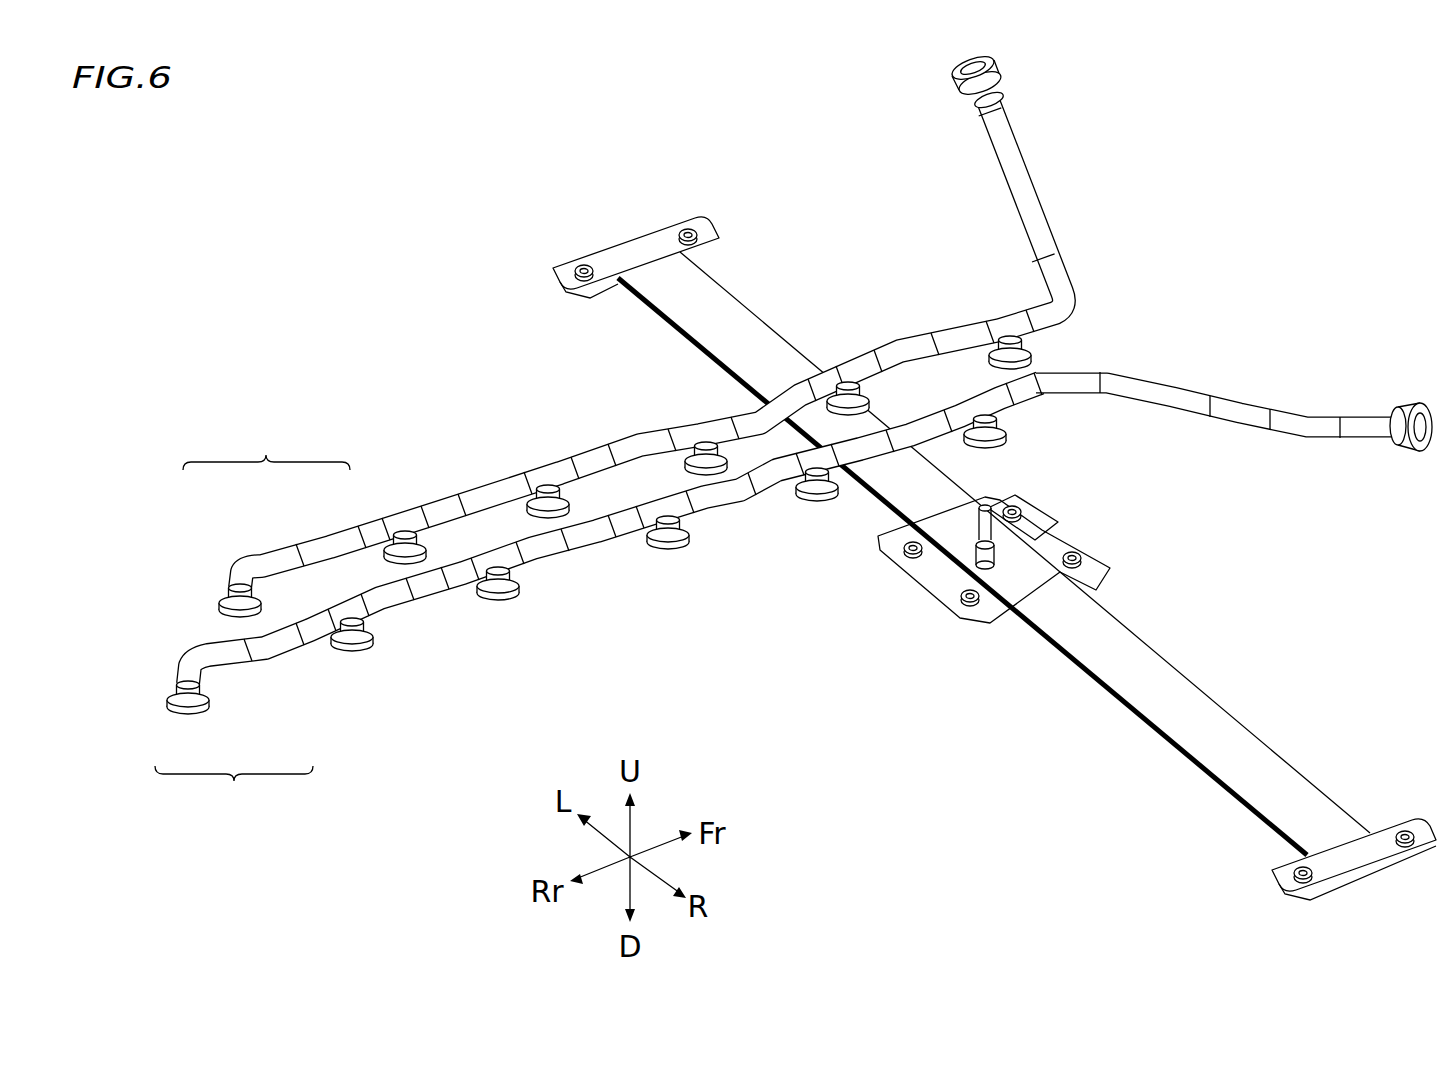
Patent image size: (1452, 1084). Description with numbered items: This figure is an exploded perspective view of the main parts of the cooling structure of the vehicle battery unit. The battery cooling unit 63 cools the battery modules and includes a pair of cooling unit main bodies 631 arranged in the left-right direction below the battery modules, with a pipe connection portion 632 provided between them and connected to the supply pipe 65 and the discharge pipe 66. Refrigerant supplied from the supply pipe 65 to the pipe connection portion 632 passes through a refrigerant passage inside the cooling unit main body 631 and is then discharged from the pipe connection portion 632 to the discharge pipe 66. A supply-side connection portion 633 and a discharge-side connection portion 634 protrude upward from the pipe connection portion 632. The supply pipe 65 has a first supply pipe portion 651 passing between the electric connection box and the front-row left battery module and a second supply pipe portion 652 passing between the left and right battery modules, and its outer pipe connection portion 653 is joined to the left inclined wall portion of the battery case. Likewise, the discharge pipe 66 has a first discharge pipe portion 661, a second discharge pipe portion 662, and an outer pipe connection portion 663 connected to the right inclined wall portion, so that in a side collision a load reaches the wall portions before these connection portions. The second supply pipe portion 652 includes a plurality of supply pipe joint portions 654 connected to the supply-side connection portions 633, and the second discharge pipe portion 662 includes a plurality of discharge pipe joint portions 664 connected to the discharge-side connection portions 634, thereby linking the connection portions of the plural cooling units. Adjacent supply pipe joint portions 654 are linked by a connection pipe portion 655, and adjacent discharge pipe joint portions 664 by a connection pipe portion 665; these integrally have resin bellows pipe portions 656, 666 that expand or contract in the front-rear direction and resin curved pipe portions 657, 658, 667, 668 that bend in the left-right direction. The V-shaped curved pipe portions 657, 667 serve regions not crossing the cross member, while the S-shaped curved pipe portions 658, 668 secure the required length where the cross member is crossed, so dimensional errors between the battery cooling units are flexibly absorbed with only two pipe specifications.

The battery cooling unit 63 is at (994, 558).
The cooling unit main body 631 is at (712, 318).
The pipe connection portion 632 is at (1075, 552).
The supply-side connection portion 633 is at (1000, 507).
The discharge-side connection portion 634 is at (1032, 523).
The supply pipe 65 is at (627, 332).
The first supply pipe portion 651 is at (1033, 200).
The second supply pipe portion 652 is at (405, 512).
The outer pipe connection portion 653 is at (1000, 78).
The supply pipe joint portion 654 is at (903, 340).
The connection pipe portion 655 is at (266, 446).
The bellows pipe portion 656 is at (833, 377).
The curved pipe portion 657 is at (782, 395).
The curved pipe portion 658 is at (930, 350).
The discharge pipe 66 is at (803, 571).
The first discharge pipe portion 661 is at (1225, 388).
The second discharge pipe portion 662 is at (357, 665).
The outer pipe connection portion 663 is at (1425, 455).
The discharge pipe joint portion 664 is at (990, 430).
The connection pipe portion 665 is at (234, 792).
The bellows pipe portion 666 is at (217, 668).
The curved pipe portion 667 is at (433, 595).
The curved pipe portion 668 is at (267, 642).